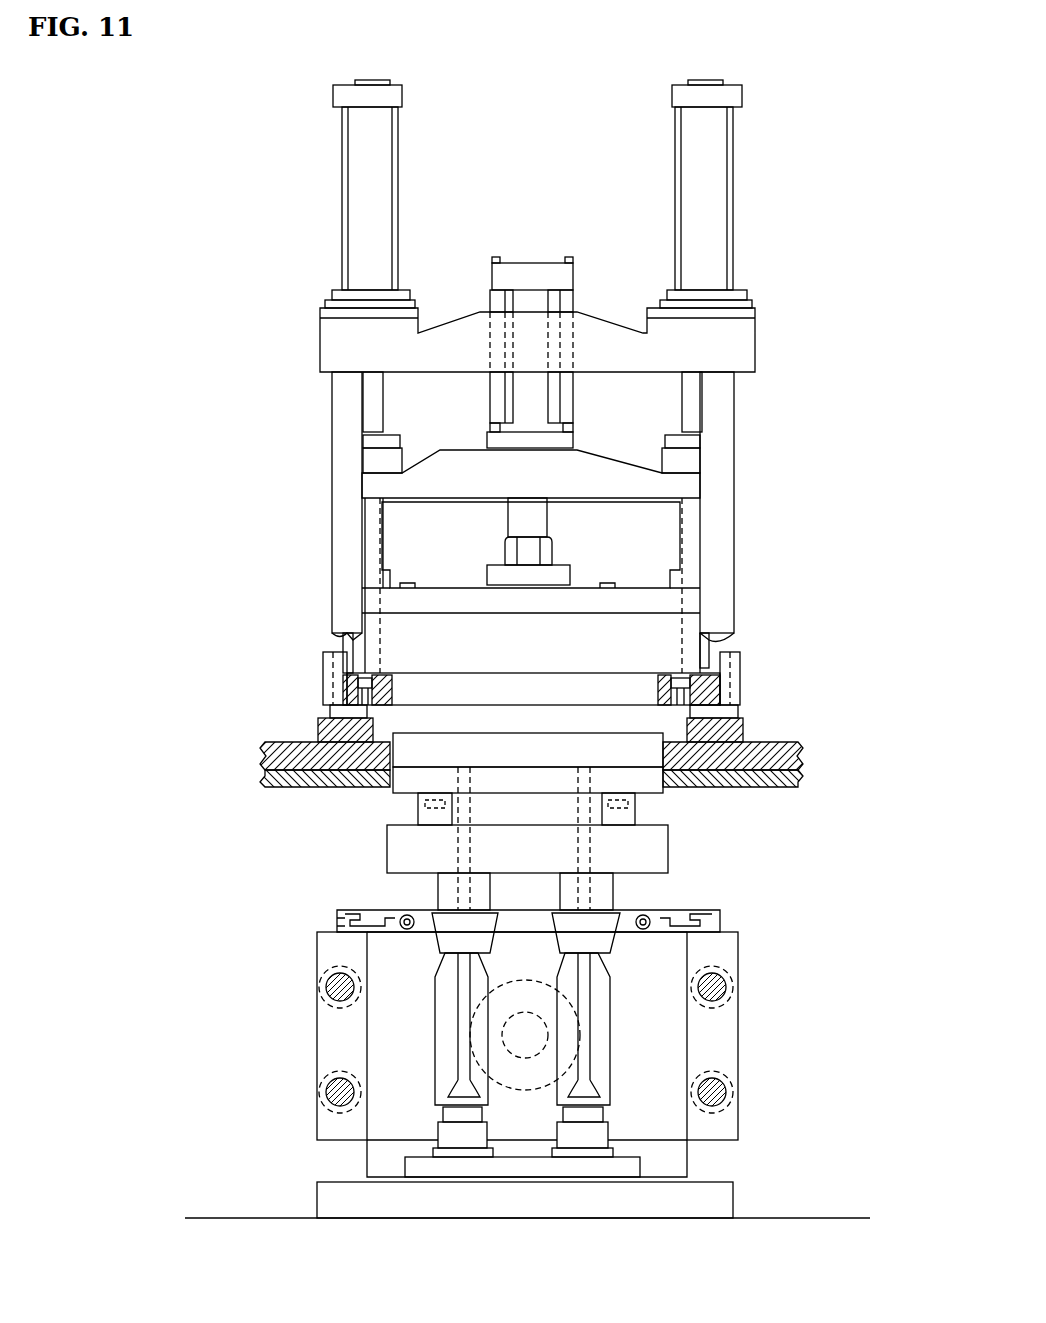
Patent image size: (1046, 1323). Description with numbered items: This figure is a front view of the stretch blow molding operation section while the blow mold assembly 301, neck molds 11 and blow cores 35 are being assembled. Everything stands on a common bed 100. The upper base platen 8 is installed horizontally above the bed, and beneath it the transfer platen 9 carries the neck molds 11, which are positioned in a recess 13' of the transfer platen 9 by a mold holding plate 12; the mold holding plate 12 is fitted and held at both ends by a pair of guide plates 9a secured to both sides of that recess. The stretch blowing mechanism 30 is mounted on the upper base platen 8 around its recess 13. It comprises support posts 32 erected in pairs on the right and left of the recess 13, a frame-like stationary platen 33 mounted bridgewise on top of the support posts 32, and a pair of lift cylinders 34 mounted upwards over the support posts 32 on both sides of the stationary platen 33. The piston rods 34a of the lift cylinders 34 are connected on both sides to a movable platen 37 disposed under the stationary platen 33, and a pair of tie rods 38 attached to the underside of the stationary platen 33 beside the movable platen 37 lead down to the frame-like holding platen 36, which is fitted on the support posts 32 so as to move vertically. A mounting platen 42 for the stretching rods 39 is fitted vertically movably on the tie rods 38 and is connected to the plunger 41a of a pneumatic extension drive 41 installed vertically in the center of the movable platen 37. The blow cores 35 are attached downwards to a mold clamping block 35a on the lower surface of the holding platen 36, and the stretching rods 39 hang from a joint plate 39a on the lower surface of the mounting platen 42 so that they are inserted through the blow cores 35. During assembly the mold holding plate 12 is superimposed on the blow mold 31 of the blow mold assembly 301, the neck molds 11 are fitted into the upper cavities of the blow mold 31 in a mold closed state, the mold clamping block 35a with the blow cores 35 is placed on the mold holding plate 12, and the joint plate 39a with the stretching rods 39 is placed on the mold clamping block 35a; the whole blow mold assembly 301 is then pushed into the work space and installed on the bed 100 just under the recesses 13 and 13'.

The stretch blowing mechanism 30 is at (300, 455).
The lift cylinders 34 is at (372, 243).
The stationary platen 33 is at (457, 335).
The pneumatic extension drive 41 is at (563, 295).
The piston rods 34a is at (373, 408).
The movable platen 37 is at (605, 458).
The support posts 32 is at (343, 577).
The tie rods 38 is at (372, 518).
The plunger 41a is at (522, 520).
The mounting platen 42 is at (615, 583).
The holding platen 36 is at (665, 668).
The recess 13 is at (490, 715).
The upper base platen 8 is at (293, 758).
The transfer platen 9 is at (270, 780).
The stretching rods 39 is at (462, 1010).
The joint plate 39a is at (645, 783).
The recess 13' is at (445, 814).
The mold clamping block 35a is at (412, 857).
The blow cores 35 is at (447, 902).
The mold holding plate 12 is at (628, 907).
The guide plates 9a is at (340, 923).
The neck molds 11 is at (440, 940).
The blow mold 31 is at (652, 1057).
The blow mold assembly 301 is at (765, 1032).
The bed 100 is at (240, 1218).